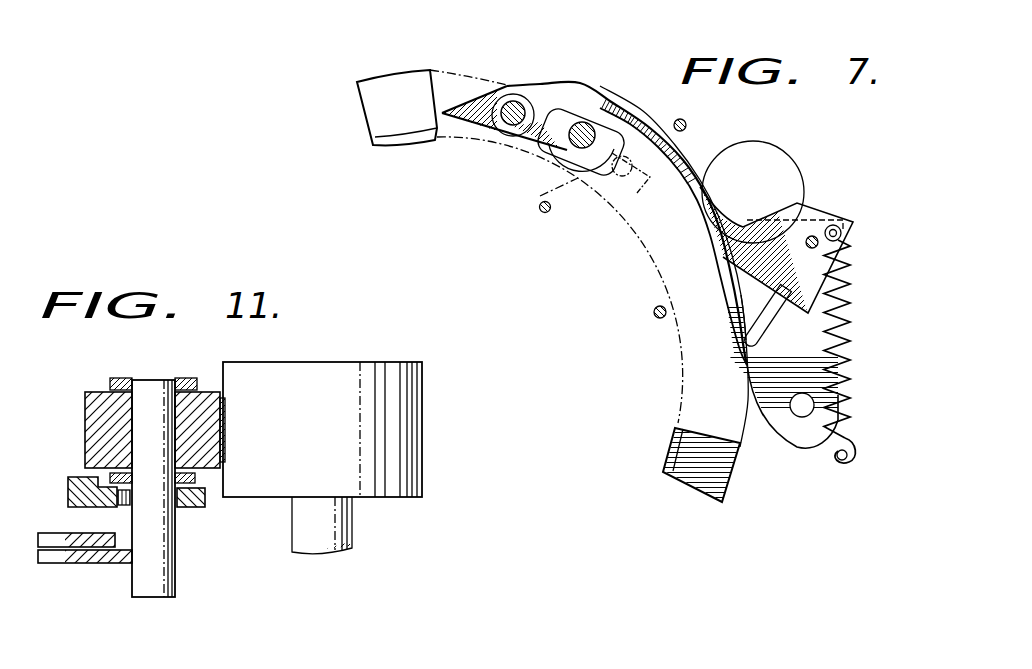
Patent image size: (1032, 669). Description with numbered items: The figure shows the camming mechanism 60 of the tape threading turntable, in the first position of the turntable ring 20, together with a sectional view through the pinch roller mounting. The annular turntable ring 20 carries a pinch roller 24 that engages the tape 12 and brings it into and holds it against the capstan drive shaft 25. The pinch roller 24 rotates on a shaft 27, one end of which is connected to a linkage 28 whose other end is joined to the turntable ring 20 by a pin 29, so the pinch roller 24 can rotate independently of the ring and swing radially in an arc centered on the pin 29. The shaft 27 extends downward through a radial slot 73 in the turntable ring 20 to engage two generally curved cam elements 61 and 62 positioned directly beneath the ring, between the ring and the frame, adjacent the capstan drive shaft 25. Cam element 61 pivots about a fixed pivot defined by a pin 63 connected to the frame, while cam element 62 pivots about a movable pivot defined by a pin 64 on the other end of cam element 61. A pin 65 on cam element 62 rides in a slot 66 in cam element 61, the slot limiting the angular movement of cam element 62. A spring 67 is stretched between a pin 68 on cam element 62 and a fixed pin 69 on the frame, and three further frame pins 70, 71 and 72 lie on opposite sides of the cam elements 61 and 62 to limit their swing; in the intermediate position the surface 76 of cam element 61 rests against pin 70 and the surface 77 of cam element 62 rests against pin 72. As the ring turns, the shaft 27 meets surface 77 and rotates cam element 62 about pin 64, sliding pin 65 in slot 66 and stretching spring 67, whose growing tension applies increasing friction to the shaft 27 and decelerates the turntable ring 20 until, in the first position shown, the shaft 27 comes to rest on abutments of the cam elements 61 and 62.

In FIG. 11, the tape 12 is at (222, 415).
In FIG. 7, the turntable ring 20 is at (380, 105).
In FIG. 11, the turntable ring 20 is at (204, 508).
In FIG. 7, the pinch roller 24 is at (540, 193).
In FIG. 11, the pinch roller 24 is at (98, 415).
In FIG. 7, the capstan drive shaft 25 is at (786, 149).
In FIG. 11, the capstan drive shaft 25 is at (400, 412).
In FIG. 7, the shaft 27 is at (578, 152).
In FIG. 11, the shaft 27 is at (155, 580).
In FIG. 7, the linkage 28 is at (632, 119).
In FIG. 11, the linkage 28 is at (180, 478).
In FIG. 7, the pin 29 is at (615, 195).
In FIG. 7, the camming mechanism 60 is at (655, 251).
In FIG. 7, the cam element 61 is at (684, 150).
In FIG. 11, the cam element 61 is at (106, 566).
In FIG. 7, the cam element 62 is at (697, 188).
In FIG. 11, the cam element 62 is at (66, 533).
In FIG. 7, the pin 63 is at (816, 406).
In FIG. 7, the pin 64 is at (516, 101).
In FIG. 7, the pin 65 is at (838, 246).
In FIG. 7, the slot 66 is at (770, 331).
In FIG. 7, the spring 67 is at (851, 349).
In FIG. 7, the pin 68 is at (843, 232).
In FIG. 7, the fixed pin 69 is at (836, 465).
In FIG. 7, the pin 70 is at (688, 122).
In FIG. 7, the pin 71 is at (542, 214).
In FIG. 7, the pin 72 is at (654, 316).
In FIG. 11, the radial slot 73 is at (130, 507).
In FIG. 7, the surface 76 is at (597, 84).
In FIG. 7, the surface 77 is at (748, 283).